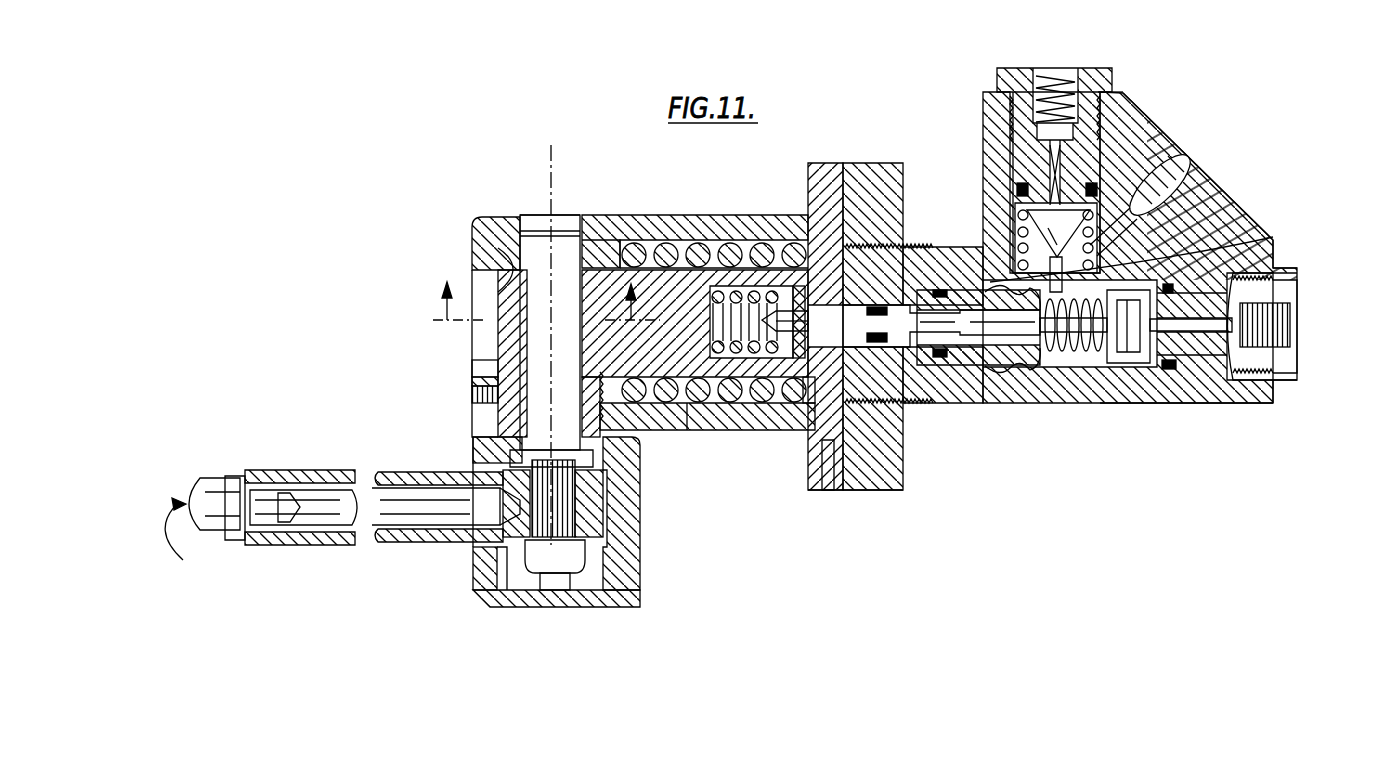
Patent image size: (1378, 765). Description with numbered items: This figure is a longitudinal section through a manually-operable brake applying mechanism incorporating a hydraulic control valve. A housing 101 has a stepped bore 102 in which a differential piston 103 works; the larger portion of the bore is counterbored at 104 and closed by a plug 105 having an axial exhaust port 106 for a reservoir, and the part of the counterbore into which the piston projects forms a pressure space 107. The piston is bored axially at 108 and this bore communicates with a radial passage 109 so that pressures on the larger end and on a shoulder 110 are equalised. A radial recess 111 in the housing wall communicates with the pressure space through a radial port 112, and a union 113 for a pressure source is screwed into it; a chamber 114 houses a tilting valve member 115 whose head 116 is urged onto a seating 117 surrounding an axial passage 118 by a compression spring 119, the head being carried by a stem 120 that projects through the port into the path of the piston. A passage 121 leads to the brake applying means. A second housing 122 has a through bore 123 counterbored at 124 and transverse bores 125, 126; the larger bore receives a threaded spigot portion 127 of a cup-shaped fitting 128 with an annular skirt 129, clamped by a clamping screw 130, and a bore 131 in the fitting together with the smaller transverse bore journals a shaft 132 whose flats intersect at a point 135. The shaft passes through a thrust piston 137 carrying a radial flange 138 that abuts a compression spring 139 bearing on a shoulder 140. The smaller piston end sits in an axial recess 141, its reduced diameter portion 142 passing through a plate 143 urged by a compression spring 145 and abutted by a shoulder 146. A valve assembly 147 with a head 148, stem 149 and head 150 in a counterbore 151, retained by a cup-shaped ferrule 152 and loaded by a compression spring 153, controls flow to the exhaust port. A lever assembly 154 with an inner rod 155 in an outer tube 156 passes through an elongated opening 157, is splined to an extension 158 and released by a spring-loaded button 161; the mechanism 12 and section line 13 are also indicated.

The connector assembly 12 is at (184, 542).
The section line 13 is at (539, 301).
The housing 101 is at (1092, 385).
The stepped bore 102 is at (935, 405).
The differential piston 103 is at (962, 370).
The counterbore 104 is at (1240, 386).
The plug 105 is at (1283, 385).
The axial exhaust port 106 is at (1290, 300).
The pressure space 107 is at (1297, 270).
The axial bore 108 is at (925, 348).
The radial passage 109 is at (940, 285).
The shoulder 110 is at (872, 432).
The radial recess 111 is at (1118, 125).
The radial port 112 is at (935, 240).
The union 113 is at (1020, 88).
The chamber 114 is at (1055, 238).
The tilting valve member 115 is at (1020, 182).
The head 116 is at (1165, 168).
The seating 117 is at (1030, 212).
The adjusting spring 118 is at (1060, 128).
The compression spring 119 is at (1150, 232).
The stem 120 is at (1285, 240).
The passage 121 is at (1178, 186).
The housing 122 is at (668, 232).
The through bore 123 is at (500, 242).
The counterbore 124 is at (685, 431).
The transverse bore 125 is at (576, 234).
The transverse bore 126 is at (478, 404).
The threaded spigot portion 127 is at (476, 372).
The fitting 128 is at (634, 545).
The annular skirt 129 is at (625, 596).
The clamping screw 130 is at (480, 389).
The bore 131 is at (605, 455).
The shaft 132 is at (535, 245).
The point 135 is at (505, 278).
The thrust piston 137 is at (722, 290).
The radial flange 138 is at (824, 205).
The compression spring 139 is at (642, 262).
The shoulder 140 is at (610, 262).
The axial recess 141 is at (735, 405).
The reduced diameter portion 142 is at (792, 403).
The plate 143 is at (856, 220).
The compression spring 145 is at (742, 292).
The shoulder 146 is at (828, 462).
The valve assembly 147 is at (1282, 340).
The head 148 is at (1262, 400).
The stem 149 is at (1192, 334).
The head 150 is at (1076, 356).
The counterbore 151 is at (1010, 372).
The cup-shaped ferrule 152 is at (1128, 366).
The compression spring 153 is at (1175, 372).
The lever assembly 154 is at (262, 476).
The inner rod 155 is at (322, 495).
The outer tube 156 is at (395, 480).
The elongated opening 157 is at (480, 470).
The extension 158 is at (552, 595).
The spring-loaded button 161 is at (216, 494).